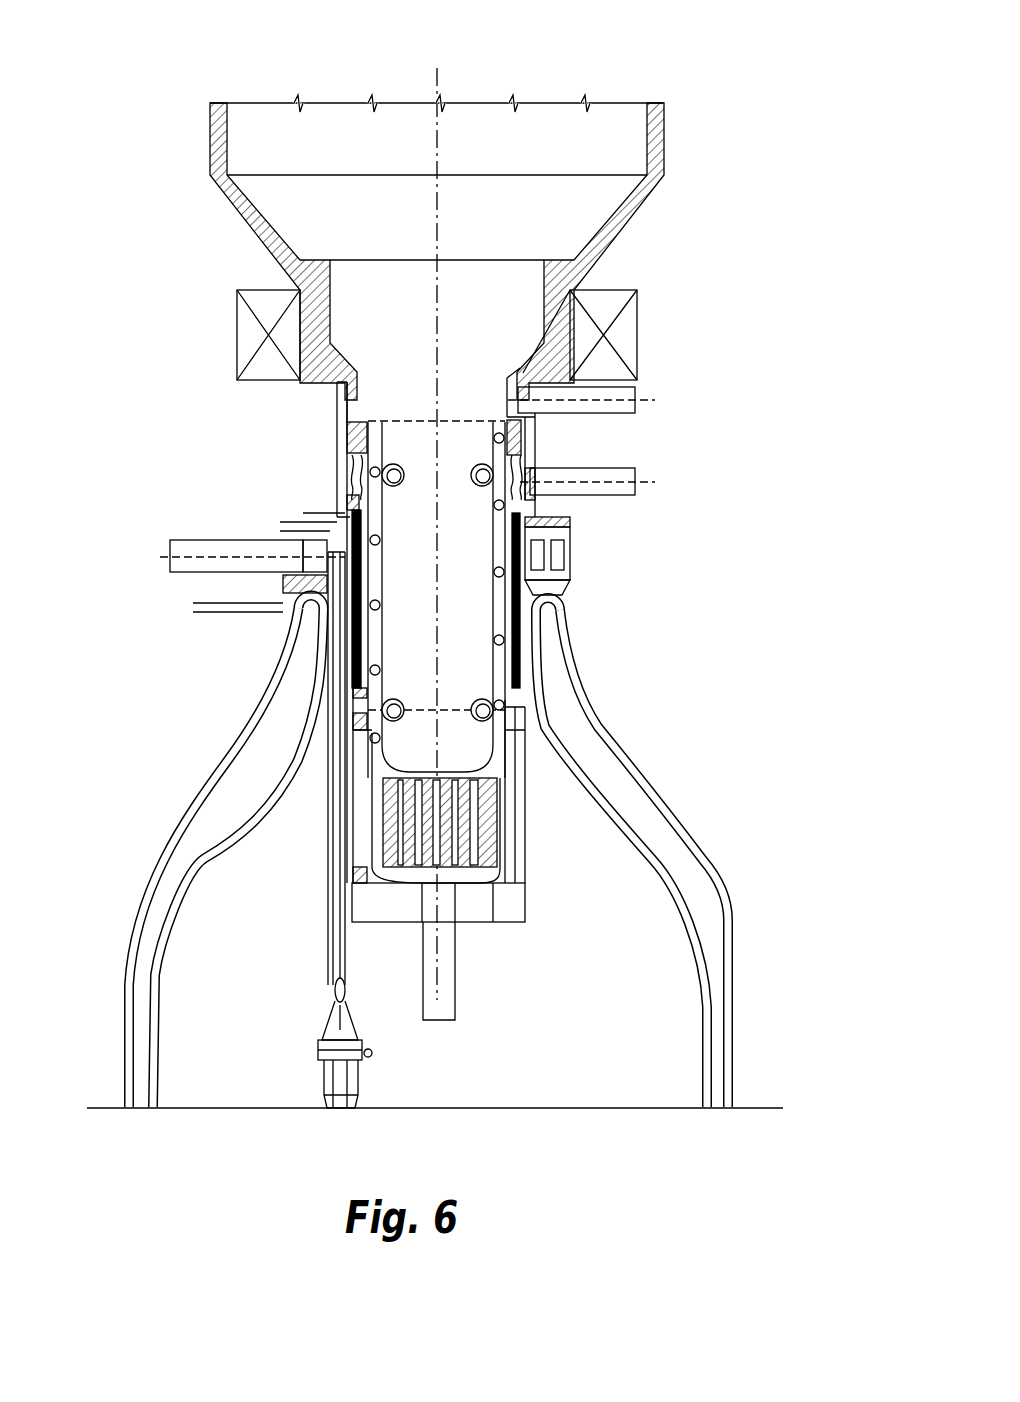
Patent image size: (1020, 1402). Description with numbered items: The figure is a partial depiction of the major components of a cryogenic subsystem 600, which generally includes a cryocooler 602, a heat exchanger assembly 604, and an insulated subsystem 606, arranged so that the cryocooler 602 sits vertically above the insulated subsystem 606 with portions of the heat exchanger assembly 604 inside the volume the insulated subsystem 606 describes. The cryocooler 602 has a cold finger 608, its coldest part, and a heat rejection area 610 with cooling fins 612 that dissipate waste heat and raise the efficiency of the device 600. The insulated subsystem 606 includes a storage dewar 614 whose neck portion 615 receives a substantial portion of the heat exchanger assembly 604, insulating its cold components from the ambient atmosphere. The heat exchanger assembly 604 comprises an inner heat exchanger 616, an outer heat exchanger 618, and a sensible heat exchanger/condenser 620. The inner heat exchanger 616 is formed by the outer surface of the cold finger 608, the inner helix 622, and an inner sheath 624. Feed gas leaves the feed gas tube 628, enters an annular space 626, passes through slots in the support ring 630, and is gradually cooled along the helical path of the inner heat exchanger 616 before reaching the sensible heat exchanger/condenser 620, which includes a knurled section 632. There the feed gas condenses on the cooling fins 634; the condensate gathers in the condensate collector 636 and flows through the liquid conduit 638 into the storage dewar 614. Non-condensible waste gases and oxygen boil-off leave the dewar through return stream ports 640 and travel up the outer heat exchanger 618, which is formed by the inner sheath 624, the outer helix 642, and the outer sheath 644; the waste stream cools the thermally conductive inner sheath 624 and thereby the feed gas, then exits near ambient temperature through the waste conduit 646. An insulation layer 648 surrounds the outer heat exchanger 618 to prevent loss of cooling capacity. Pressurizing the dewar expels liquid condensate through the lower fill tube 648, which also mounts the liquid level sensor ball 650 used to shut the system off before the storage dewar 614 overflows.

The cryogenic subsystem 600 is at (465, 31).
The cryocooler 602 is at (590, 197).
The heat exchanger assembly 604 is at (613, 590).
The insulated subsystem 606 is at (620, 738).
The cold finger 608 is at (462, 622).
The heat rejection area 610 is at (600, 262).
The cooling fins 612 is at (622, 330).
The storage dewar 614 is at (710, 937).
The neck portion 615 is at (545, 642).
The inner heat exchanger 616 is at (520, 448).
The outer heat exchanger 618 is at (570, 533).
The sensible heat exchanger/condenser 620 is at (483, 822).
The inner helix 622 is at (365, 468).
The inner sheath 624 is at (345, 500).
The annular space 626 is at (348, 395).
The feed gas tube 628 is at (637, 397).
The support ring 630 is at (360, 428).
The knurled section 632 is at (383, 772).
The cooling fins 634 is at (390, 838).
The condensate collector 636 is at (493, 922).
The liquid conduit 638 is at (447, 1007).
The return stream ports 640 is at (370, 710).
The outer helix 642 is at (363, 648).
The outer sheath 644 is at (347, 594).
The waste conduit 646 is at (640, 482).
The lower fill tube 648 is at (338, 523).
The liquid level sensor ball 650 is at (333, 995).